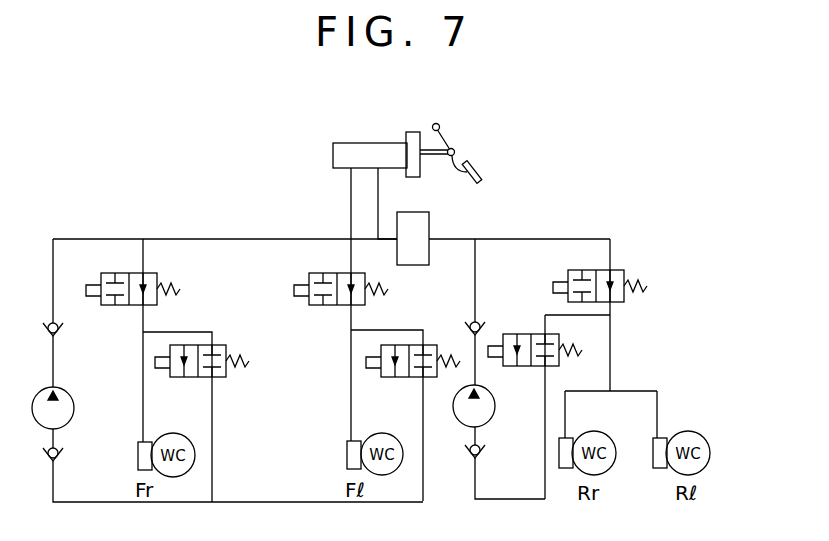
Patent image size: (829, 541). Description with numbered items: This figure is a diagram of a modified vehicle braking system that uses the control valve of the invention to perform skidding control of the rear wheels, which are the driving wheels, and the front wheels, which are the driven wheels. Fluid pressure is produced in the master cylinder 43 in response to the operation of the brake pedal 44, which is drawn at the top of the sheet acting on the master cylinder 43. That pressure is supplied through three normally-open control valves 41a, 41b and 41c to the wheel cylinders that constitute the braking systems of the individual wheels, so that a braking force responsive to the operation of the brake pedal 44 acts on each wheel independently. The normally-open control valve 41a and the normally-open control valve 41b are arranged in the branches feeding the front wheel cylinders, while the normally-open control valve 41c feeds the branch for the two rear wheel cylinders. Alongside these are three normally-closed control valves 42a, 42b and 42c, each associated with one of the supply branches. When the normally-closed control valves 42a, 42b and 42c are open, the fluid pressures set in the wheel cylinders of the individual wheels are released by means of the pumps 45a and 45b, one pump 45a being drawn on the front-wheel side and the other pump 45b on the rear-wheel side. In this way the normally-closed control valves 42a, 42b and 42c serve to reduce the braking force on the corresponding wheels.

The master cylinder 43 is at (368, 144).
The brake pedal 44 is at (477, 166).
The normally-open control valve 41a is at (158, 278).
The normally-open control valve 41b is at (372, 300).
The normally-open control valve 41c is at (625, 273).
The normally-closed control valve 42a is at (230, 358).
The normally-closed control valve 42b is at (402, 377).
The normally-closed control valve 42c is at (522, 366).
The pump 45a is at (72, 402).
The pump 45b is at (490, 418).